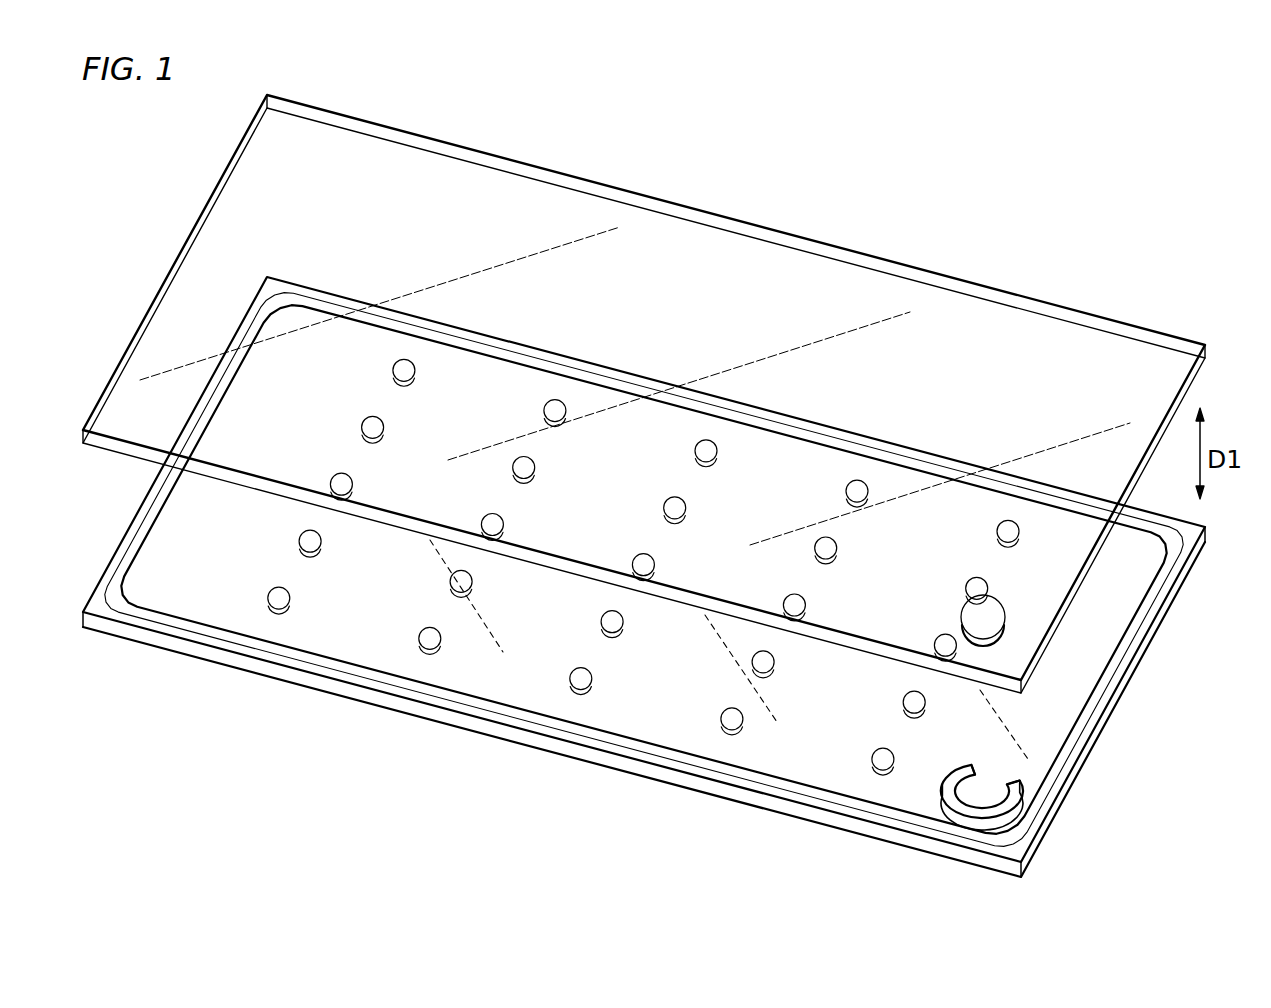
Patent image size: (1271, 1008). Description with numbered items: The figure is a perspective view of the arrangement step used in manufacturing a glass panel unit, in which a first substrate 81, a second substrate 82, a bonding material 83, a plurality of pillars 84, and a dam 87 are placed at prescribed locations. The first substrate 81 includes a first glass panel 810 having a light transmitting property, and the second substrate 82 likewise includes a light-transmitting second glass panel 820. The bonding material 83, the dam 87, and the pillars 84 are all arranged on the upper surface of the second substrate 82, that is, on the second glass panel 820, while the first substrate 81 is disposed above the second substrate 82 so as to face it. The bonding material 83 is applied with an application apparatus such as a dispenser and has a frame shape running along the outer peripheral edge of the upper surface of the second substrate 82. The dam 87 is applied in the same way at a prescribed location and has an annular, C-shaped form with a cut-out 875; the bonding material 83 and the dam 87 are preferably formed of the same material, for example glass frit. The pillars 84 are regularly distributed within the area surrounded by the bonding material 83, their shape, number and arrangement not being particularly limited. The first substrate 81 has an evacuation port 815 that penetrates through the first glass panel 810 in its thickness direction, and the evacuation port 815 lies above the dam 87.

The first substrate 81 is at (505, 185).
The first glass panel 810 is at (695, 243).
The evacuation port 815 is at (988, 612).
The second substrate 82 is at (168, 560).
The second glass panel 820 is at (518, 682).
The bonding material 83 is at (808, 790).
The pillars 84 is at (432, 630).
The dam 87 is at (950, 790).
The cut-out 875 is at (995, 780).